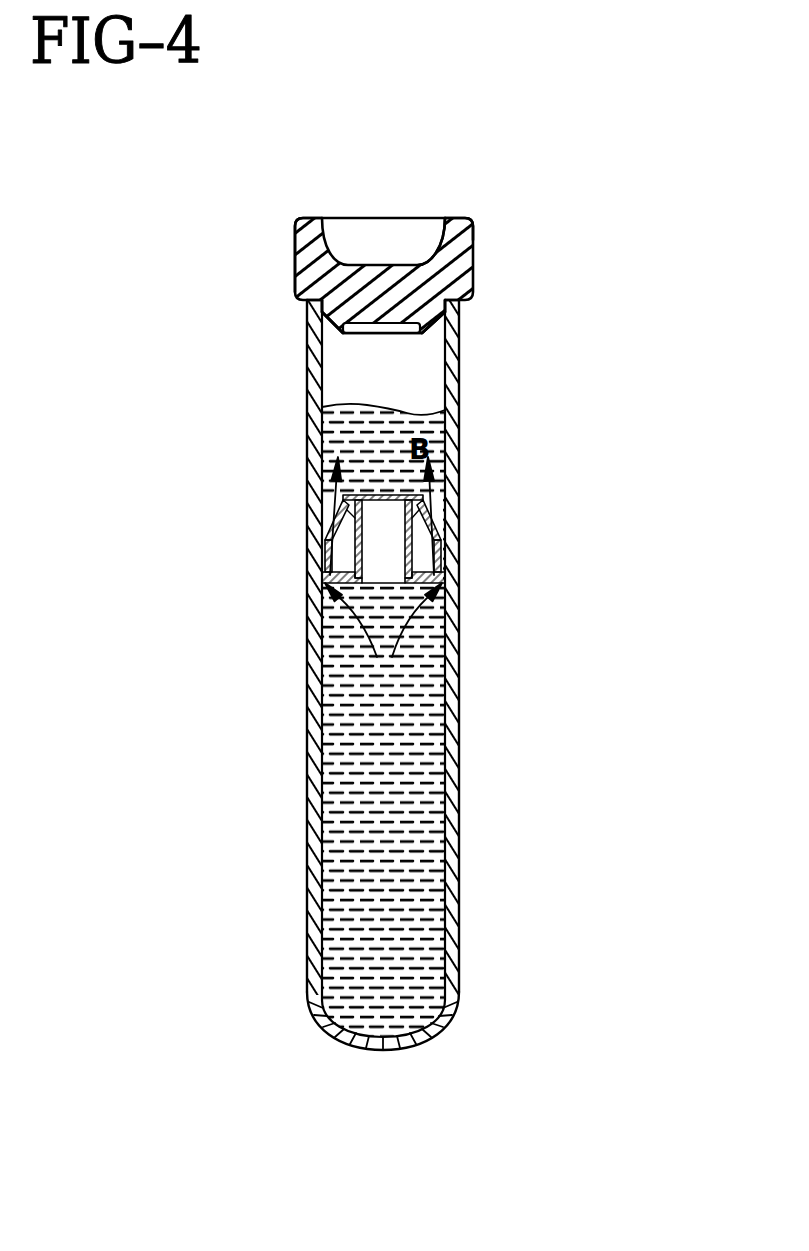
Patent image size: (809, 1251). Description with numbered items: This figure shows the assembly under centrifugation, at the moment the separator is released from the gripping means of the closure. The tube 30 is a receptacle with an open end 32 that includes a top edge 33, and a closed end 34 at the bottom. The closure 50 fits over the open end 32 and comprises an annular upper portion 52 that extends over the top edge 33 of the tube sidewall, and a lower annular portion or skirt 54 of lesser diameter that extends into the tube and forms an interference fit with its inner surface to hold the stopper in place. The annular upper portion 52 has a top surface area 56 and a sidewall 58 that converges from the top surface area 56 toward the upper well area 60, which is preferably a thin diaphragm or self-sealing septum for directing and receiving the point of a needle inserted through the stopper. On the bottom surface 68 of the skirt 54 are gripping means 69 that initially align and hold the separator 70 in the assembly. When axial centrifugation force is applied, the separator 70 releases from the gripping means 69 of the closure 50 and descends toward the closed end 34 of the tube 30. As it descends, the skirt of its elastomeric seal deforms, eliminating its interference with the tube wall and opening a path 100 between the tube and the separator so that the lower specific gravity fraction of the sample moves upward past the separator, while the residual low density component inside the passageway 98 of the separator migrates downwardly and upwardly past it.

The tube 30 is at (417, 682).
The open end 32 is at (447, 332).
The top edge 33 is at (460, 300).
The closed end 34 is at (403, 1043).
The closure 50 is at (358, 318).
The annular upper portion 52 is at (305, 273).
The lower annular portion or skirt 54 is at (343, 328).
The top surface area 56 is at (462, 220).
The sidewall 58 is at (430, 247).
The upper well area 60 is at (391, 263).
The bottom surface 68 is at (412, 337).
The gripping means 69 is at (405, 345).
The separator 70 is at (383, 518).
The passageway 98 is at (388, 530).
The path 100 is at (430, 528).